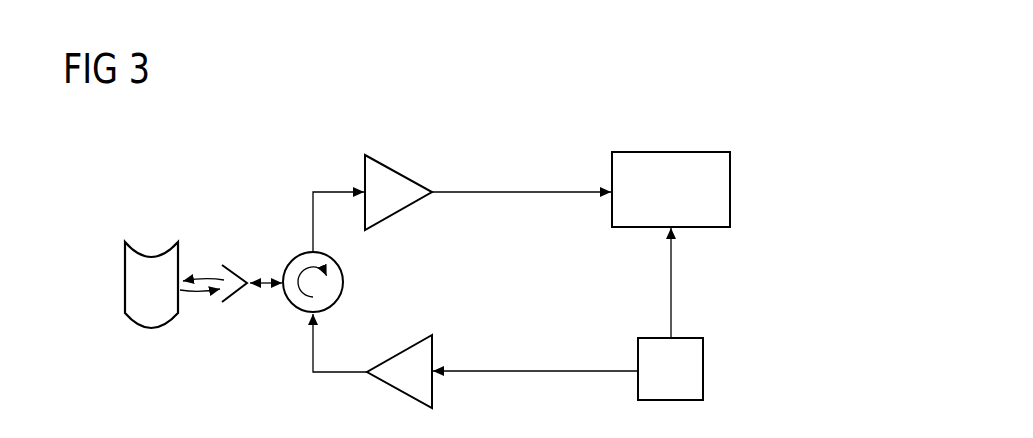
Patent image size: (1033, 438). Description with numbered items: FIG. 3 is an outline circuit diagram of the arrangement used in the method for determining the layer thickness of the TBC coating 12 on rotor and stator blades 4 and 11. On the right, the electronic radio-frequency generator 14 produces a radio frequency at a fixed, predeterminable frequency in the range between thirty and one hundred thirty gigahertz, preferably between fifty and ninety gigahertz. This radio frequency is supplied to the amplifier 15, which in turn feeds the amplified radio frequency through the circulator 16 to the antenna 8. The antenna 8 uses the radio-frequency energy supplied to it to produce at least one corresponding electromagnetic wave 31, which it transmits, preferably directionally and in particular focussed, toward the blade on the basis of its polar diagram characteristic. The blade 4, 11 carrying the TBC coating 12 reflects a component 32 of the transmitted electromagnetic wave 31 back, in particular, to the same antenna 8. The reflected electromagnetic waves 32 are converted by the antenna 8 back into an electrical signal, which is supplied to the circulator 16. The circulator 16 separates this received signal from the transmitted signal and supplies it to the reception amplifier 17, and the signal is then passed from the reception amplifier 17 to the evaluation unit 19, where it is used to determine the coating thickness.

The rotor blade 4 is at (110, 250).
The stator blade 11 is at (120, 285).
The TBC coating 12 is at (140, 288).
The electromagnetic wave 31 is at (200, 277).
The reflected component of the electromagnetic wave 32 is at (197, 290).
The antenna 8 is at (235, 263).
The circulator 16 is at (345, 283).
The reception amplifier 17 is at (387, 163).
The amplifier 15 is at (402, 352).
The evaluation unit 19 is at (633, 152).
The electronic radio-frequency generator 14 is at (638, 345).